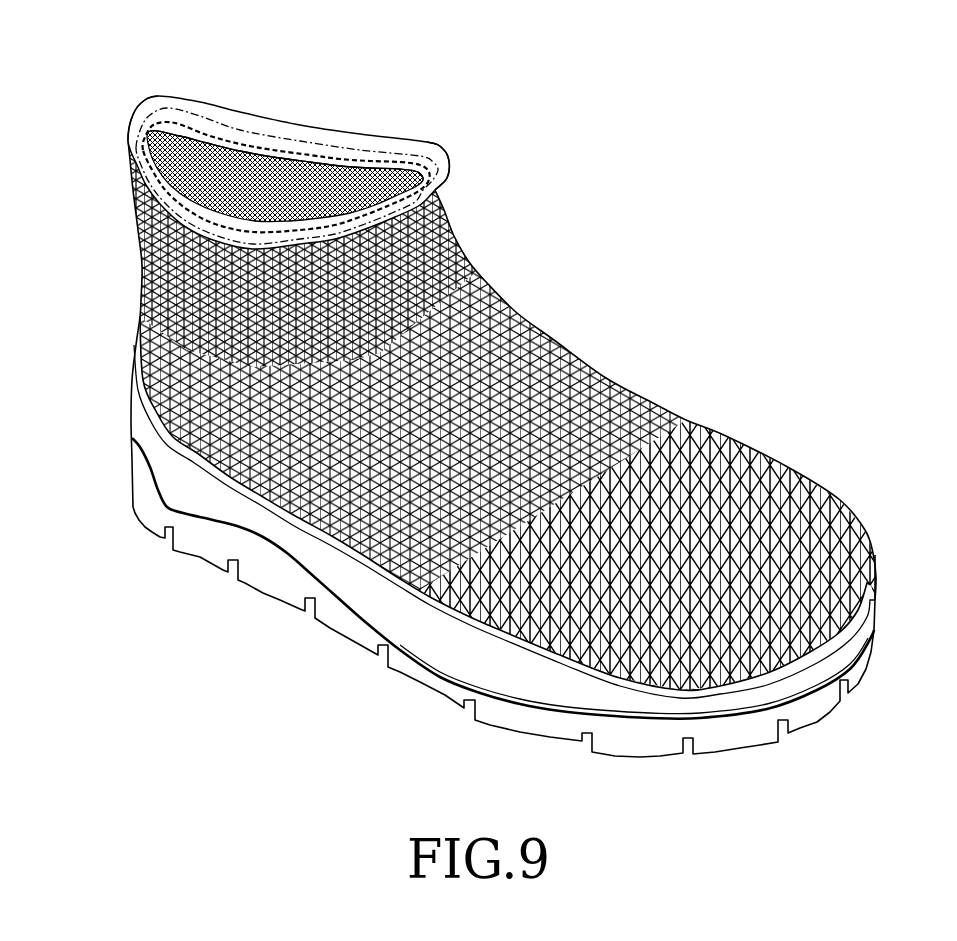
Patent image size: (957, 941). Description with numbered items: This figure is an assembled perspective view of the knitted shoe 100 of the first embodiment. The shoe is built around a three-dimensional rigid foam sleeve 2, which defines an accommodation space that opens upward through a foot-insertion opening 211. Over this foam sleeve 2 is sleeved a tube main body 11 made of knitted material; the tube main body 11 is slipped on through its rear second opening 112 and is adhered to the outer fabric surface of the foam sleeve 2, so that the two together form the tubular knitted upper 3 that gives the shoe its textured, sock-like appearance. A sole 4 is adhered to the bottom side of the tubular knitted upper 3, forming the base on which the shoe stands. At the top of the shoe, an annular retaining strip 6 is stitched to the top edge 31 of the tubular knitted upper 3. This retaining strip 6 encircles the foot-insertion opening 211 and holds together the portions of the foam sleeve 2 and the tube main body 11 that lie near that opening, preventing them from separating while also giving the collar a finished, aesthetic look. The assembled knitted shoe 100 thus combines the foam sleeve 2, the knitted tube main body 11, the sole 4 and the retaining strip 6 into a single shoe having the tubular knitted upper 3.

The knitted shoe 100 is at (460, 391).
The tubular knitted upper 3 is at (660, 393).
The tube main body 11 is at (560, 352).
The annular retaining strip 6 is at (383, 139).
The top edge 31 is at (440, 190).
The second opening 112 is at (128, 133).
The foam sleeve 2 is at (268, 182).
The foot-insertion opening 211 is at (229, 168).
The sole 4 is at (276, 606).